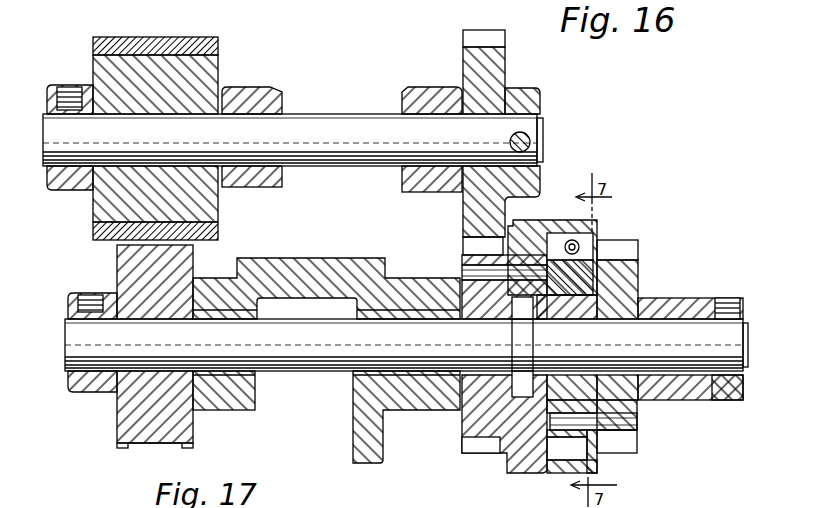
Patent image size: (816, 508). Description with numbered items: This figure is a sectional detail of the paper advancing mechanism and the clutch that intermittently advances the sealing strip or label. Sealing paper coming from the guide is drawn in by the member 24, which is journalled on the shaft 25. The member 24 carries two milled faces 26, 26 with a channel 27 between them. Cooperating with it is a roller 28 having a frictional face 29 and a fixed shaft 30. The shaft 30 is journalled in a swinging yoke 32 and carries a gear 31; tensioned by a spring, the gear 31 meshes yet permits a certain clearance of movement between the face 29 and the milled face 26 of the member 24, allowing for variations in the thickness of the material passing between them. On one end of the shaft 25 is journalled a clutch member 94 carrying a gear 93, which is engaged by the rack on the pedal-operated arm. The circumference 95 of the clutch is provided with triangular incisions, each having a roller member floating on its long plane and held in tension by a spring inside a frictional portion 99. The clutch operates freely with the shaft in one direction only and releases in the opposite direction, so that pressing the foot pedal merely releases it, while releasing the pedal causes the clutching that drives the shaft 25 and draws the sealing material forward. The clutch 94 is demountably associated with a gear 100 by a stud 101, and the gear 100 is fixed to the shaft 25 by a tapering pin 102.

The member 24 is at (143, 359).
The shaft 25 is at (75, 340).
The milled face 26 is at (122, 446).
The channel 27 is at (157, 446).
The roller 28 is at (130, 150).
The frictional face 29 is at (95, 232).
The fixed shaft 30 is at (55, 140).
The gear 31 is at (497, 63).
The yoke 32 is at (410, 97).
The gear 93 is at (628, 249).
The clutch member 94 is at (640, 286).
The circumference 95 is at (606, 256).
The frictional portion 99 is at (511, 474).
The gear 100 is at (467, 428).
The stud 101 is at (462, 268).
The tapering pin 102 is at (467, 408).